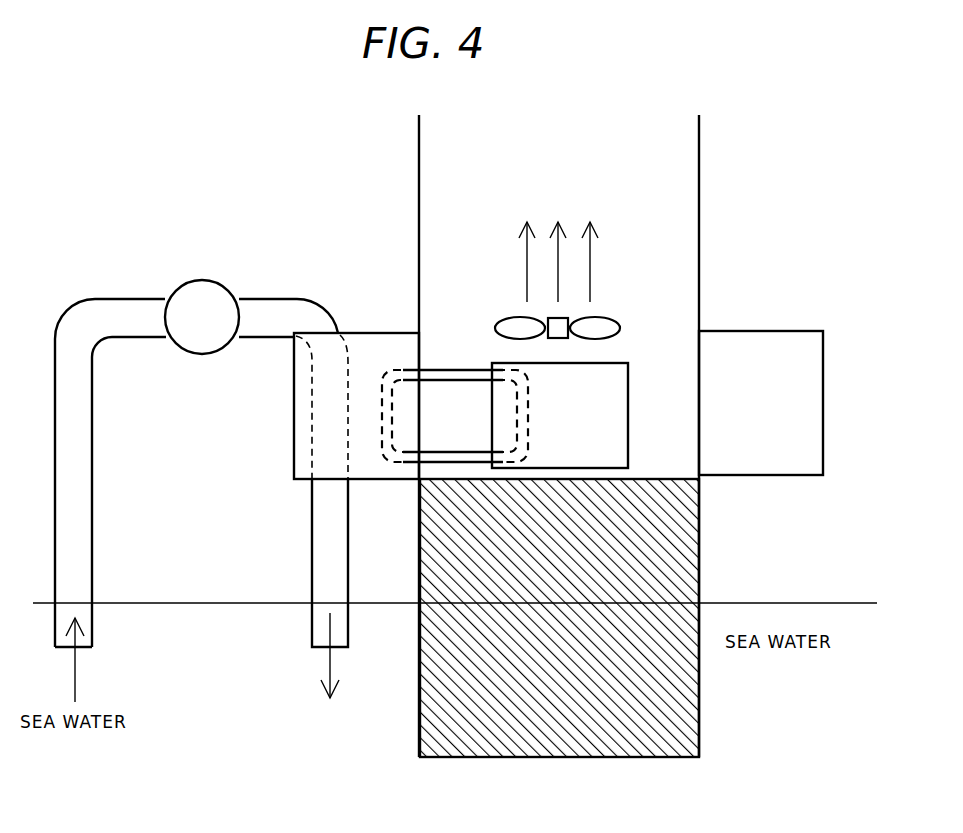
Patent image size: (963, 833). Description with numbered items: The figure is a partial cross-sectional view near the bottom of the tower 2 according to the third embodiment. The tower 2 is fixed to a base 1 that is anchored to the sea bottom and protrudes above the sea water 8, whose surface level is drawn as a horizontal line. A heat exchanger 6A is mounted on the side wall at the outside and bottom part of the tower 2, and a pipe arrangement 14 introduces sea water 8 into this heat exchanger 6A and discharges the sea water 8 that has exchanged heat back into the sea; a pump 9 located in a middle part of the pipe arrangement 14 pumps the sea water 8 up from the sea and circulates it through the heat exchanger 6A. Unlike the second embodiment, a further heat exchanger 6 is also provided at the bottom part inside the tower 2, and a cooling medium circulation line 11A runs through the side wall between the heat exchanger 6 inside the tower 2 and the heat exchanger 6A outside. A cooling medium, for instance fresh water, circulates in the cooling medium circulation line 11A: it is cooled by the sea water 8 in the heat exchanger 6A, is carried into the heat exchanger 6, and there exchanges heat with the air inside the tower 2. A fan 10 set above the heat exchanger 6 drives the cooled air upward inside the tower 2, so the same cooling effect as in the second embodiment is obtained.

The base 1 is at (702, 518).
The tower 2 is at (699, 215).
The heat exchanger 6 is at (615, 363).
The heat exchanger 6A is at (375, 332).
The sea water 8 is at (733, 603).
The pump 9 is at (200, 280).
The fan 10 is at (600, 318).
The cooling medium circulation line 11A is at (452, 368).
The pipe arrangement 14 is at (120, 299).